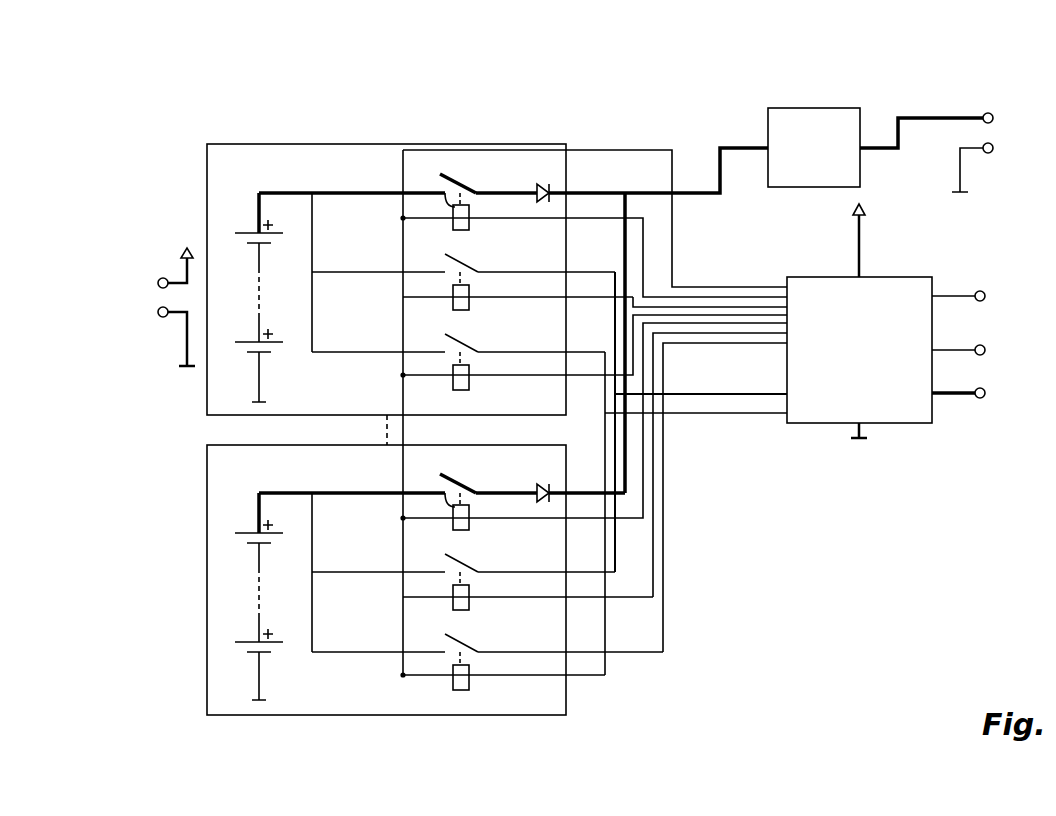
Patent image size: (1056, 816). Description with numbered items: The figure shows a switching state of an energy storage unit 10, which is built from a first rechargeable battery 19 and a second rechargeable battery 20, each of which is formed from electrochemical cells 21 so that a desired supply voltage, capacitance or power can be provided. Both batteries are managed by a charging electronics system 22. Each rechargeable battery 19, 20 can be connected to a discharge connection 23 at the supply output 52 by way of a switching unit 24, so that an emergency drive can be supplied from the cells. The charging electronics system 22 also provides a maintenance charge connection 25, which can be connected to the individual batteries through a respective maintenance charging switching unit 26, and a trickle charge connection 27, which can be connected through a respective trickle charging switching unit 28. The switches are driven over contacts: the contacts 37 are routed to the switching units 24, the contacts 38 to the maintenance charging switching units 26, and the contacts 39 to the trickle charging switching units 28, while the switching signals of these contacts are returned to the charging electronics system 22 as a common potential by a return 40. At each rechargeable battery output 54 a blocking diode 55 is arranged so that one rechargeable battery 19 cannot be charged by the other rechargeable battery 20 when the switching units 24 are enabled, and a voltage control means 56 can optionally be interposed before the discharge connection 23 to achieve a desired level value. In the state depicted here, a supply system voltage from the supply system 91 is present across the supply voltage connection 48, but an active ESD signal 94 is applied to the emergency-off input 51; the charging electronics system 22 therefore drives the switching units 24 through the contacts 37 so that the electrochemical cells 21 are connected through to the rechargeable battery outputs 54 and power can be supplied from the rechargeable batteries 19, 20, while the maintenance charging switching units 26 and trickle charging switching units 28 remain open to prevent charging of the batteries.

The energy storage unit 10 is at (888, 585).
The first rechargeable battery 19 is at (283, 157).
The second rechargeable battery 20 is at (297, 706).
The electrochemical cell 21 is at (243, 216).
The charging electronics system 22 is at (890, 412).
The discharge connection 23 is at (950, 118).
The switching unit 24 is at (447, 173).
The maintenance charge connection 25 is at (710, 398).
The maintenance charging switching unit 26 is at (468, 285).
The trickle charge connection 27 is at (750, 416).
The trickle charging switching unit 28 is at (522, 188).
The contact 37 is at (750, 297).
The contact 38 is at (715, 308).
The contact 39 is at (692, 313).
The return 40 is at (590, 150).
The supply voltage connection 48 is at (159, 281).
The emergency-off input 51 is at (985, 398).
The supply output 52 is at (722, 148).
The rechargeable battery output 54 is at (468, 367).
The blocking diode 55 is at (543, 175).
The voltage control means 56 is at (806, 138).
The supply system 91 is at (150, 307).
The ESD signal 94 is at (950, 386).